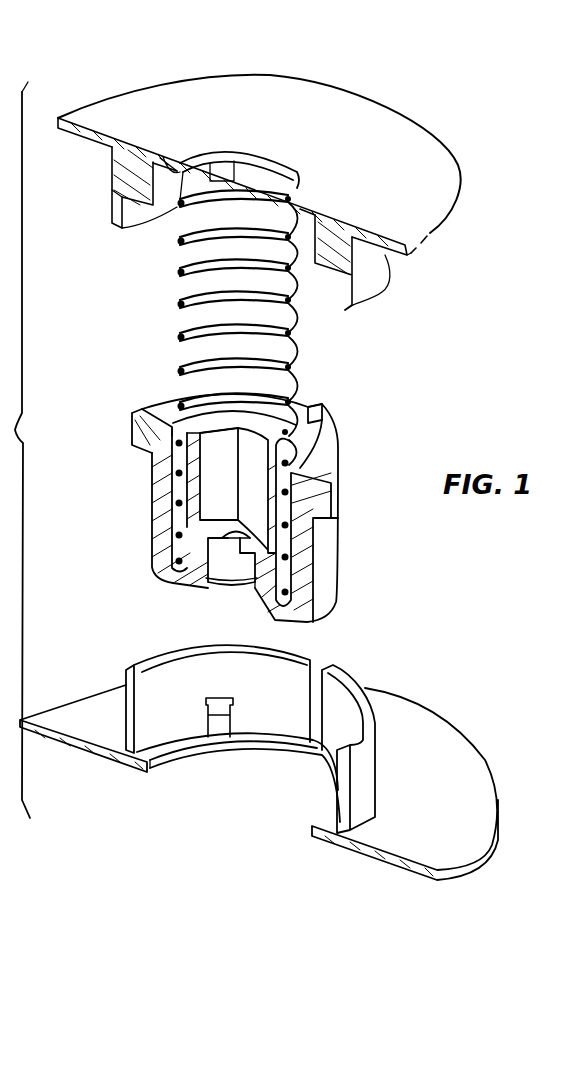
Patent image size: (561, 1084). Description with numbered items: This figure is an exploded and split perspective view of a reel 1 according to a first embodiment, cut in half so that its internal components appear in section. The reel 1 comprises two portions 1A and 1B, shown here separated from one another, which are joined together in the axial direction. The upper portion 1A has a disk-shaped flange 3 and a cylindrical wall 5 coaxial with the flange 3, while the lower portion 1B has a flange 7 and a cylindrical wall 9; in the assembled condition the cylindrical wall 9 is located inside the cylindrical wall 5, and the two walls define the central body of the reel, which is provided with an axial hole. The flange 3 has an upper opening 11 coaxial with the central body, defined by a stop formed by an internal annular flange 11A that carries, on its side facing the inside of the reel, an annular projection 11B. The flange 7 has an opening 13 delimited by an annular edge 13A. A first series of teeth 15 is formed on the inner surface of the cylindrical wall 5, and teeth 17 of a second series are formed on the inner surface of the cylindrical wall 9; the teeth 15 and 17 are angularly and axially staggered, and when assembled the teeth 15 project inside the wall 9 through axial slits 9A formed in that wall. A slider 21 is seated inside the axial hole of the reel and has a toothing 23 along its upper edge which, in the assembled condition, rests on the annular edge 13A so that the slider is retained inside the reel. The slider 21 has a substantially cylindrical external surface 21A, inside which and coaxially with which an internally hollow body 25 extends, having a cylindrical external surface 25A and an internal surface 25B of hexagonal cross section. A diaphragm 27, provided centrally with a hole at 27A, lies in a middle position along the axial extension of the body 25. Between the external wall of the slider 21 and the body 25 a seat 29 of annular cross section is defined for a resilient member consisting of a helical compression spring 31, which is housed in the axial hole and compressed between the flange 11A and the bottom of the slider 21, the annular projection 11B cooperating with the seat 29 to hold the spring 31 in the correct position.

The reel 1 is at (15, 450).
The upper portion of the reel 1A is at (432, 168).
The lower portion of the reel 1B is at (476, 732).
The disk-shaped flange 3 is at (430, 241).
The cylindrical wall 5 is at (366, 298).
The flange 7 is at (473, 796).
The cylindrical wall 9 is at (365, 775).
The axial slits 9A is at (126, 707).
The upper opening 11 is at (280, 160).
The internal annular flange 11A is at (170, 163).
The annular projection 11B is at (165, 188).
The opening 13 is at (292, 772).
The annular edge 13A is at (178, 748).
The first series of teeth 15 is at (118, 213).
The second series of teeth 17 is at (220, 730).
The slider 21 is at (350, 500).
The cylindrical external surface 21A is at (318, 562).
The toothing 23 is at (324, 418).
The internally hollow body 25 is at (190, 522).
The cylindrical external surface 25A is at (255, 588).
The internal surface 25B is at (232, 470).
The diaphragm 27 is at (230, 526).
The hole 27A is at (220, 580).
The seat 29 is at (180, 487).
The helical compression spring 31 is at (223, 367).